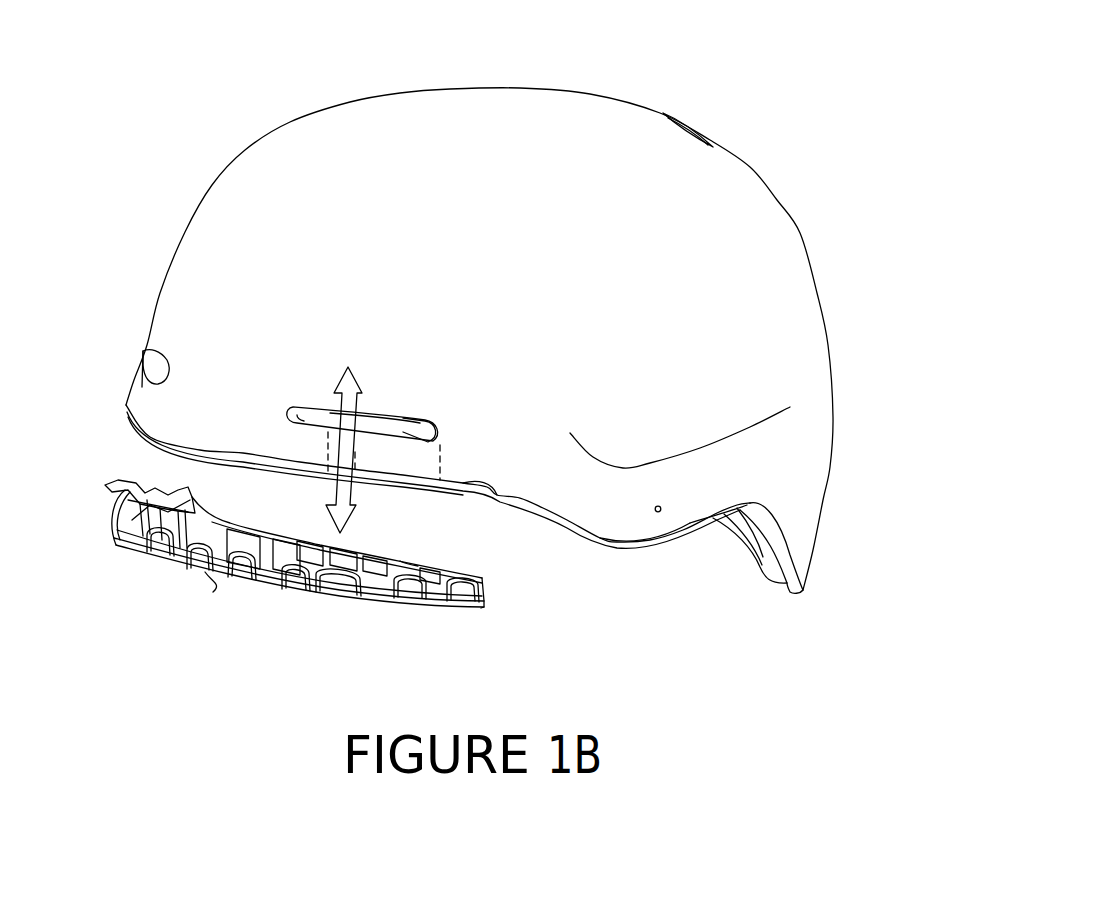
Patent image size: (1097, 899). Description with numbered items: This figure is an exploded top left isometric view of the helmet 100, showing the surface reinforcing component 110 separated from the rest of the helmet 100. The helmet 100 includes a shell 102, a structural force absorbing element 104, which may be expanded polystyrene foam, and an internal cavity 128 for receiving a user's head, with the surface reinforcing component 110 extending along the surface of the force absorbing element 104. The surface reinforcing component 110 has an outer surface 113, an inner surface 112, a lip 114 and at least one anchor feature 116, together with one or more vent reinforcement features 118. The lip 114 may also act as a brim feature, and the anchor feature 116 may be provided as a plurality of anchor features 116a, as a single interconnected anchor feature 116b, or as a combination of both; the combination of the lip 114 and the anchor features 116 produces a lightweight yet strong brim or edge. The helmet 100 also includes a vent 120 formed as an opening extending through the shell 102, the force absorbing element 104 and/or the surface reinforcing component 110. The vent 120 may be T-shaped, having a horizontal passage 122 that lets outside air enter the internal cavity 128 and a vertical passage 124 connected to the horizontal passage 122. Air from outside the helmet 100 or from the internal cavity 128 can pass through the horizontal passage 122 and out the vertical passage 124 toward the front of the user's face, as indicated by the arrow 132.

The helmet 100 is at (479, 330).
The shell 102 is at (750, 167).
The force absorbing element 104 is at (772, 557).
The surface reinforcing component 110 is at (313, 584).
The inner surface 112 is at (265, 567).
The outer surface 113 is at (347, 608).
The lip 114 is at (483, 613).
The anchor feature 116 is at (125, 492).
The anchor features 116a is at (266, 580).
The interconnected anchor feature 116b is at (408, 560).
The vent reinforcement features 118 is at (368, 577).
The vent 120 is at (362, 394).
The horizontal passage 122 is at (288, 420).
The vertical passage 124 is at (418, 417).
The internal cavity 128 is at (620, 558).
The arrow 132 is at (356, 375).